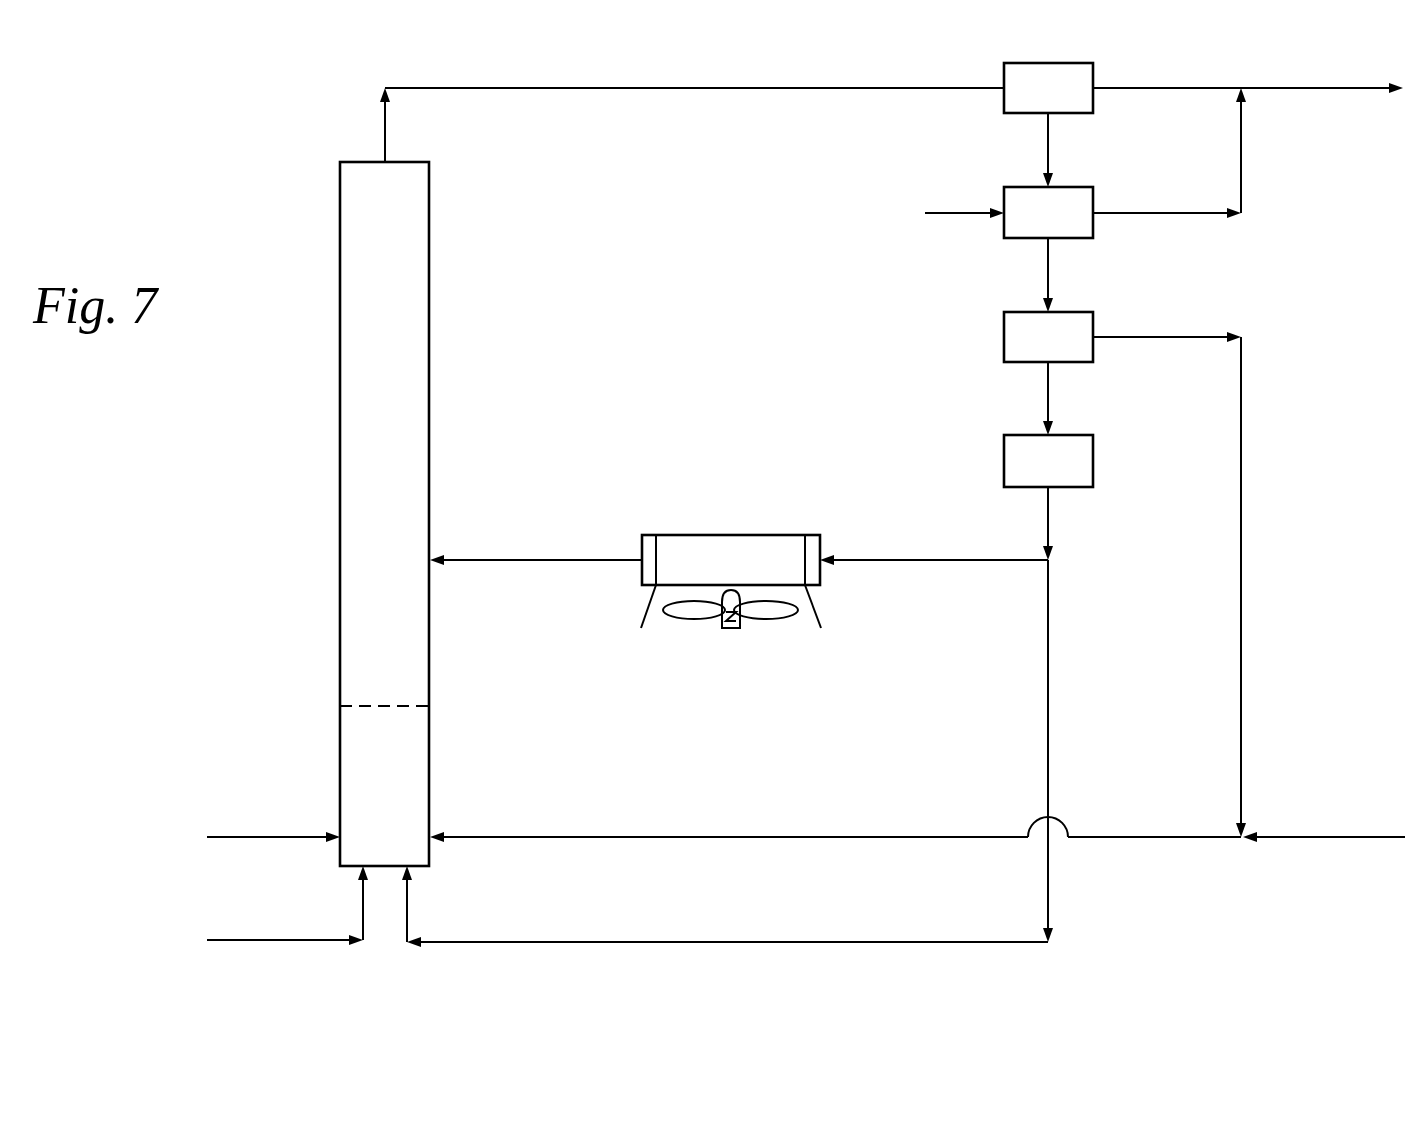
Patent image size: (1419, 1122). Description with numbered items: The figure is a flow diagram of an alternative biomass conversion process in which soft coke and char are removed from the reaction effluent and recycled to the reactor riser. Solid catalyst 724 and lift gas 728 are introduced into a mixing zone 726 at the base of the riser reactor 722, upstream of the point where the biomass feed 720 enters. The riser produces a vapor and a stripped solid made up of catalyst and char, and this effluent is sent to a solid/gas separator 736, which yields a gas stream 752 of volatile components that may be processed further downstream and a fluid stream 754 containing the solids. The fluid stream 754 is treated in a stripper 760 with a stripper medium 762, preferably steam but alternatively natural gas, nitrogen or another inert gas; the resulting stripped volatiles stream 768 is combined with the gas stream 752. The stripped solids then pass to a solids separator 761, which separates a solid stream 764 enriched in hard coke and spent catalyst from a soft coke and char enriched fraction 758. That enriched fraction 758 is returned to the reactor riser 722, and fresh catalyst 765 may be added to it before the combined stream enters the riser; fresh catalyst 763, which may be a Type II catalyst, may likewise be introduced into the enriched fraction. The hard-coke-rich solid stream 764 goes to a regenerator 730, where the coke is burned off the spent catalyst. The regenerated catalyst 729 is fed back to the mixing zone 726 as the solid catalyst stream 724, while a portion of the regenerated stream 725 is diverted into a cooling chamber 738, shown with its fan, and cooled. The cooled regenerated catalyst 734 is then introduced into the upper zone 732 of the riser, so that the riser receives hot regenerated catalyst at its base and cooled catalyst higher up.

The biomass feed 720 is at (250, 835).
The riser reactor 722 is at (672, 477).
The solid catalyst 724 is at (527, 940).
The portion of regenerated stream 725 is at (912, 558).
The mixing zone 726 is at (415, 783).
The lift gas 728 is at (250, 938).
The regenerated catalyst 729 is at (1050, 516).
The regenerator 730 is at (1048, 461).
The upper zone 732 is at (355, 510).
The cooled regenerated catalyst 734 is at (528, 558).
The solid/gas separator 736 is at (1048, 88).
The cooling chamber 738 is at (731, 581).
The gas stream 752 is at (1344, 86).
The fluid stream 754 is at (1050, 145).
The soft coke and char enriched fraction 758 is at (1243, 559).
The stripper 760 is at (1048, 212).
The solids separator 761 is at (1048, 337).
The stripper medium 762 is at (952, 210).
The fresh catalyst 763 is at (1050, 269).
The solid stream enriched in hard coke 764 is at (1050, 392).
The fresh catalyst 765 is at (1346, 835).
The stripped volatiles stream 768 is at (1243, 146).